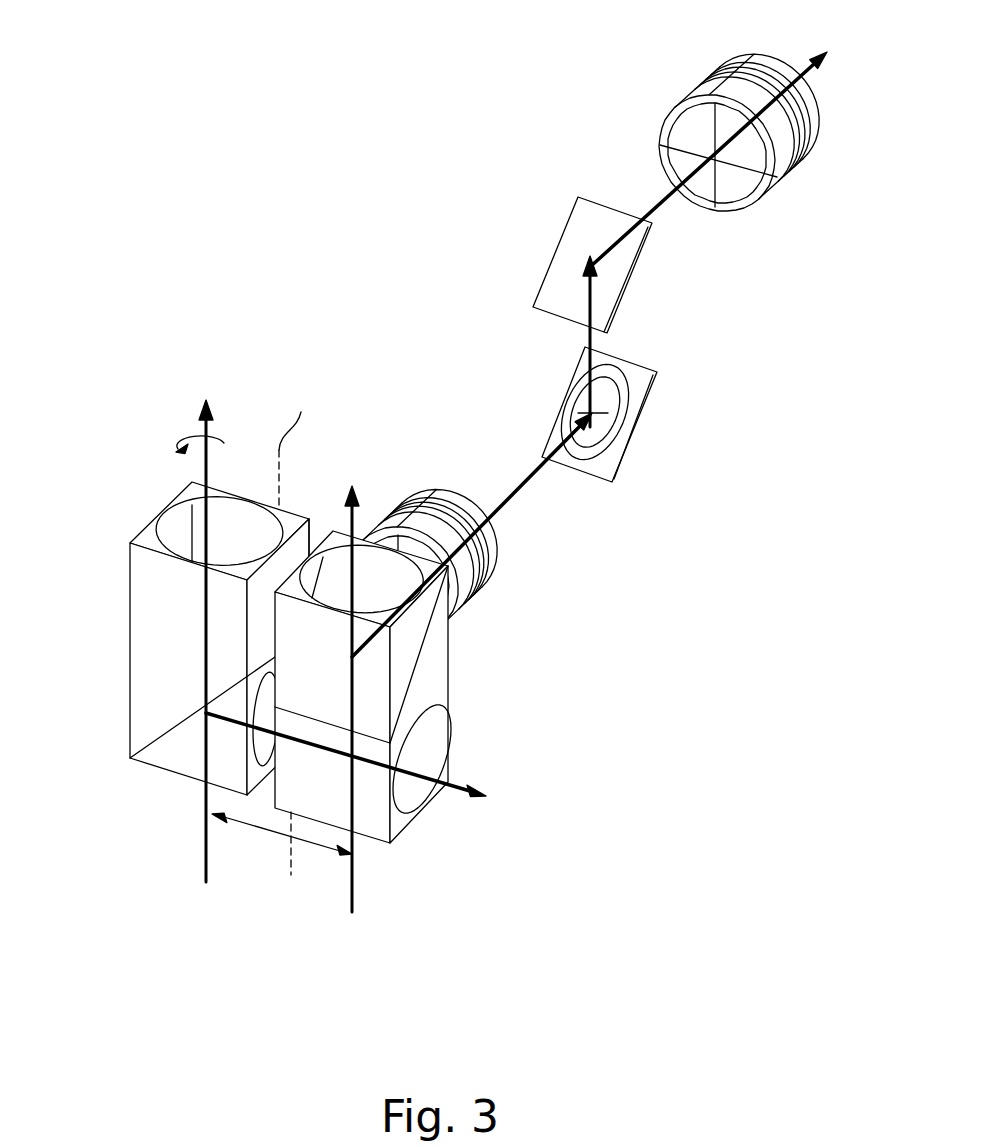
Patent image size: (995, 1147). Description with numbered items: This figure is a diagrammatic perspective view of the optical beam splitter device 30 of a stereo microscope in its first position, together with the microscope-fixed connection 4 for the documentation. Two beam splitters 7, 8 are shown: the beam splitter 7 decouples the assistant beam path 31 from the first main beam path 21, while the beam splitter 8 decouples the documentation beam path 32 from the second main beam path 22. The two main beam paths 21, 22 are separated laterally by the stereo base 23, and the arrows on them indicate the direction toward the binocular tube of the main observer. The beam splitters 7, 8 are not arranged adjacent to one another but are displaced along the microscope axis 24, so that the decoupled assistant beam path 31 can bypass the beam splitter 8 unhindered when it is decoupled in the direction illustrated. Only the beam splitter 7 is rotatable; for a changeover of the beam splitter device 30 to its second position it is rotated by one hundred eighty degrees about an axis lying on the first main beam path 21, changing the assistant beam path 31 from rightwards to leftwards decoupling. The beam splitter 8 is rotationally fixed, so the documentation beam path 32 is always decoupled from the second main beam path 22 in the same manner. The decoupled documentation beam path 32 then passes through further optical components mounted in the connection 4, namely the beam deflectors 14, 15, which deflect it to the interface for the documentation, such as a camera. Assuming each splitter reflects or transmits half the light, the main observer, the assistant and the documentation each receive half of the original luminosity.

The connection for the documentation 4 is at (808, 204).
The beam splitter 7 is at (147, 712).
The beam splitter 8 is at (440, 688).
The beam deflector 14 is at (640, 385).
The beam deflector 15 is at (578, 237).
The first main beam path 21 is at (212, 852).
The second main beam path 22 is at (357, 877).
The stereo base 23 is at (277, 835).
The microscope axis 24 is at (301, 629).
The optical beam splitter device 30 is at (113, 486).
The decoupled assistant beam path 31 is at (460, 780).
The decoupled documentation beam path 32 is at (808, 70).